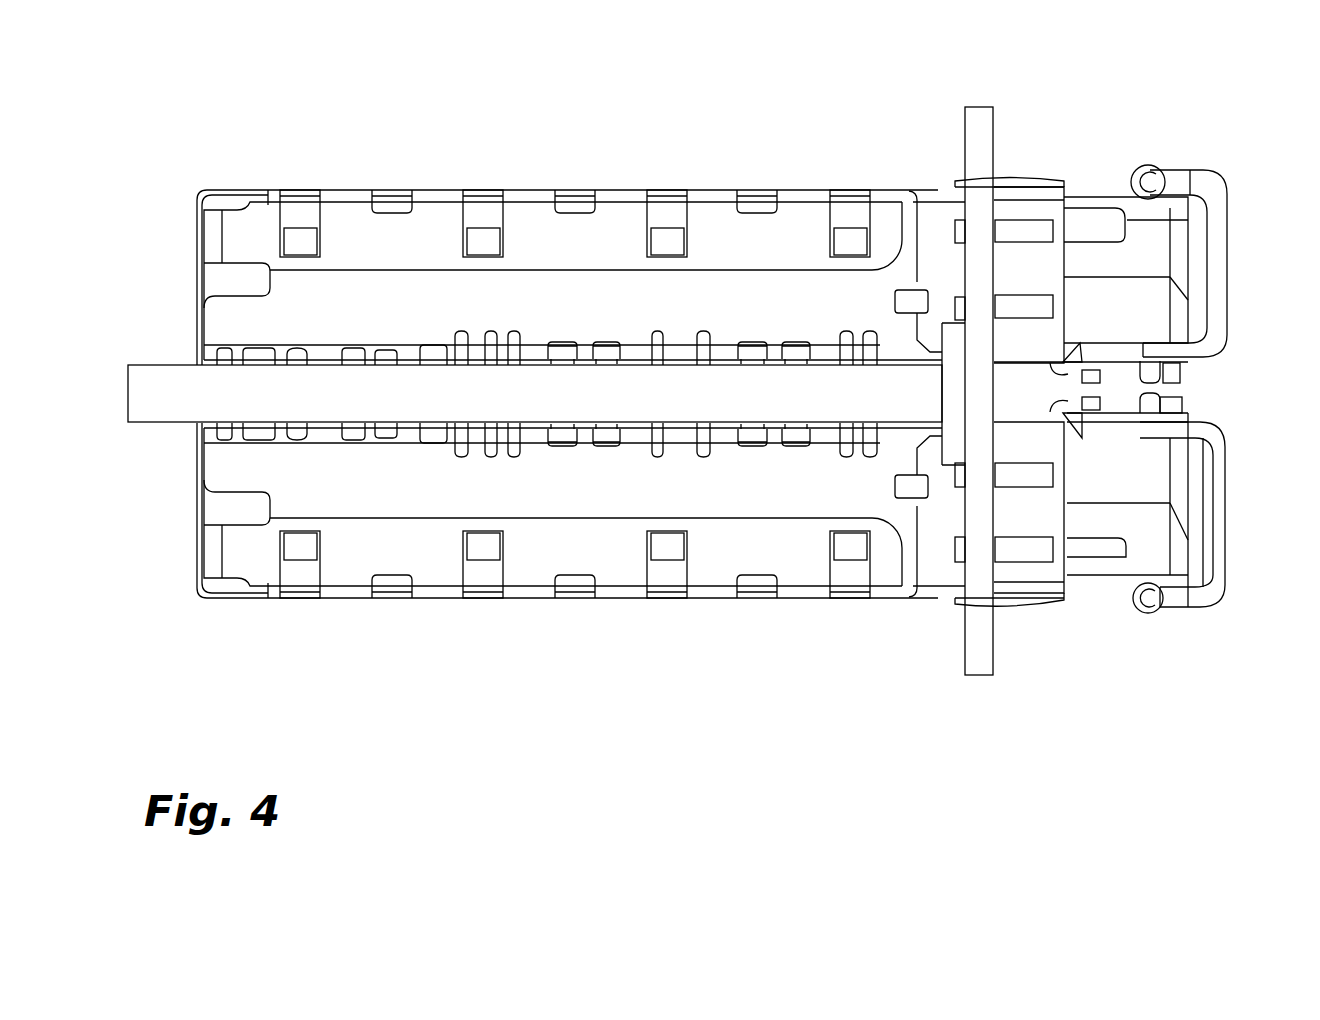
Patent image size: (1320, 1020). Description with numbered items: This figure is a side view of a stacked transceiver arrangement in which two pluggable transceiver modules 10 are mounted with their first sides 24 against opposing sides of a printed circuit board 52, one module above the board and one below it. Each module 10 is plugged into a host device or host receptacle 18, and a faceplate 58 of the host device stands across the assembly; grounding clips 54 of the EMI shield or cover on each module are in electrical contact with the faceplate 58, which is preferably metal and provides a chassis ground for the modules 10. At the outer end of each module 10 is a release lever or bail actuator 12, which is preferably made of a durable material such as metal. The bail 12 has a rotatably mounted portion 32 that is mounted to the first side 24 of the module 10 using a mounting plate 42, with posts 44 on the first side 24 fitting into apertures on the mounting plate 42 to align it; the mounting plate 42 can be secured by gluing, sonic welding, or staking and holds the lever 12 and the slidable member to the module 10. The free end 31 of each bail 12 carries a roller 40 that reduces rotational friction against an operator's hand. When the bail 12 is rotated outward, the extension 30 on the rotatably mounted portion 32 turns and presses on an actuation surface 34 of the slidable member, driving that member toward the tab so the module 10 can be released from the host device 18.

The pluggable transceiver module 10 is at (437, 210).
The release lever or bail actuator 12 is at (1222, 292).
The host device or host receptacle 18 is at (708, 193).
The first side of the module 24 is at (537, 365).
The extension 30 is at (1187, 387).
The free end of the bail 31 is at (1212, 183).
The rotatably mounted portion of the bail 32 is at (1162, 402).
The actuation surface 34 is at (1130, 398).
The roller 40 is at (1148, 165).
The mounting plate 42 is at (1073, 371).
The posts 44 is at (1088, 393).
The printed circuit board 52 is at (148, 384).
The grounding clips 54 is at (1016, 183).
The faceplate 58 is at (978, 135).